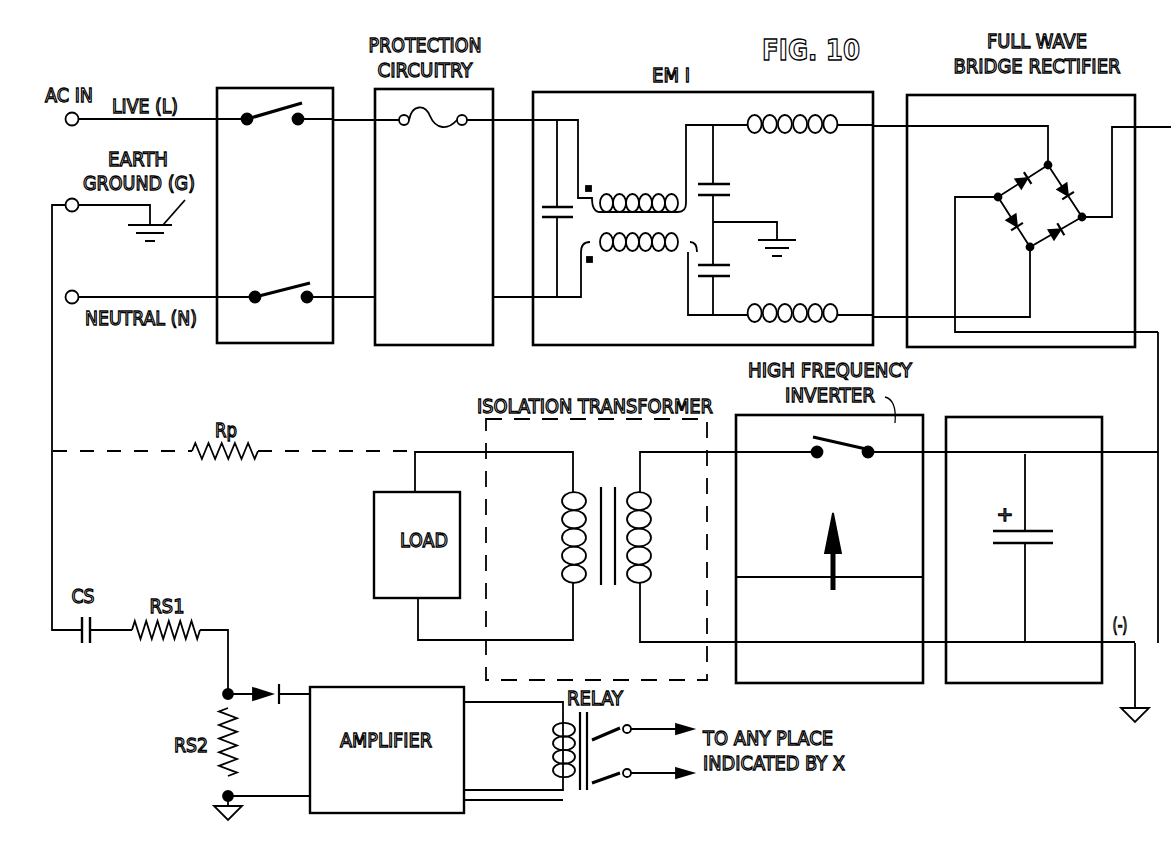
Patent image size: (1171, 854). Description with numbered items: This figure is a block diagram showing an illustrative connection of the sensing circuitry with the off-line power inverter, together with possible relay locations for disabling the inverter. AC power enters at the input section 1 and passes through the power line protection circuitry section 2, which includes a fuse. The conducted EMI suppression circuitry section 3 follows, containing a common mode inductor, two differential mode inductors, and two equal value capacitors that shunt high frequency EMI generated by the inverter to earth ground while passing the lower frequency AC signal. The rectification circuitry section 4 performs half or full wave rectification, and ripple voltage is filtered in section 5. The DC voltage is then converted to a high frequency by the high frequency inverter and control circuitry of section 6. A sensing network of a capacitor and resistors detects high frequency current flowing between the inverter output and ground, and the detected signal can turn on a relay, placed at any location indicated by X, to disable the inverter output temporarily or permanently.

The input section 1 is at (293, 345).
The power line protection circuitry section 2 is at (455, 345).
The conducted EMI suppression circuitry section 3 is at (687, 342).
The rectification circuitry section 4 is at (1070, 347).
The ripple voltage filtering section 5 is at (1065, 683).
The high frequency inverter and control circuitry section 6 is at (853, 683).